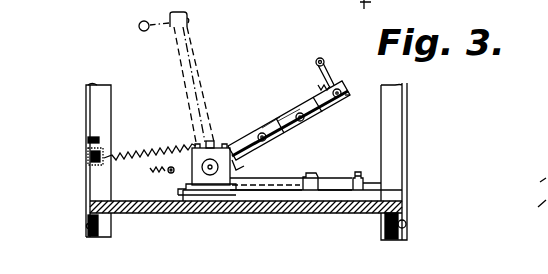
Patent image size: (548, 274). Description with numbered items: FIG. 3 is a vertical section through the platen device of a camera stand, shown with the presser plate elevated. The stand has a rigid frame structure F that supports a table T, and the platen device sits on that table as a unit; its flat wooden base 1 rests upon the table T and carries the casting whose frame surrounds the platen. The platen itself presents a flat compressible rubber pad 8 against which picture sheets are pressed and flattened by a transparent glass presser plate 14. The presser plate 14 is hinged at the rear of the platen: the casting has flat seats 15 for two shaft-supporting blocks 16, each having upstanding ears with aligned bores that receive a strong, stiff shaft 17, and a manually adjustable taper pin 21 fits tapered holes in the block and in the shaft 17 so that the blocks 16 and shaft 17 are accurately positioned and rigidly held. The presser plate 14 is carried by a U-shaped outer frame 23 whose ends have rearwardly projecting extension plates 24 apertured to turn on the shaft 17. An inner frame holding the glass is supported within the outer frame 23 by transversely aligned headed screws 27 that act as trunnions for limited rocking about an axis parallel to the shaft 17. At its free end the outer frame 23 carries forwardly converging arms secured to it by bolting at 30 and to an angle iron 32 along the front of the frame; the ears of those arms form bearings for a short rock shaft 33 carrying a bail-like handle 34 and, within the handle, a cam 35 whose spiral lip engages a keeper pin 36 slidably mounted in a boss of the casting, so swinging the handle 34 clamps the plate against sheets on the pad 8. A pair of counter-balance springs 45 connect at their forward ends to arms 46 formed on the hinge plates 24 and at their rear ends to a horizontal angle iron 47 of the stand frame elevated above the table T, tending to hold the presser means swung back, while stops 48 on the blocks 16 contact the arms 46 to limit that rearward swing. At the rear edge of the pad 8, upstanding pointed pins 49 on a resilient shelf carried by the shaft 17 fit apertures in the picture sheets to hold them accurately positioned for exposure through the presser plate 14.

The frame structure F is at (88, 100).
The table T is at (137, 214).
The base 1 is at (394, 195).
The rubber pad 8 is at (297, 176).
The presser plate 14 is at (280, 138).
The seats 15 is at (206, 186).
The shaft-supporting blocks 16 is at (186, 176).
The shaft 17 is at (234, 171).
The taper pin 21 is at (208, 142).
The outer frame 23 is at (279, 121).
The extension plates 24 is at (239, 151).
The headed screws 27 is at (264, 123).
The bolting 30 is at (305, 122).
The angle iron 32 is at (318, 89).
The rock shaft 33 is at (343, 91).
The bail-like handle 34 is at (328, 72).
The cam 35 is at (341, 99).
The keeper pin 36 is at (357, 172).
The counter-balance springs 45 is at (136, 151).
The arms 46 is at (192, 136).
The horizontal angle iron 47 is at (88, 140).
The stops 48 is at (182, 195).
The pointed pins 49 is at (307, 175).